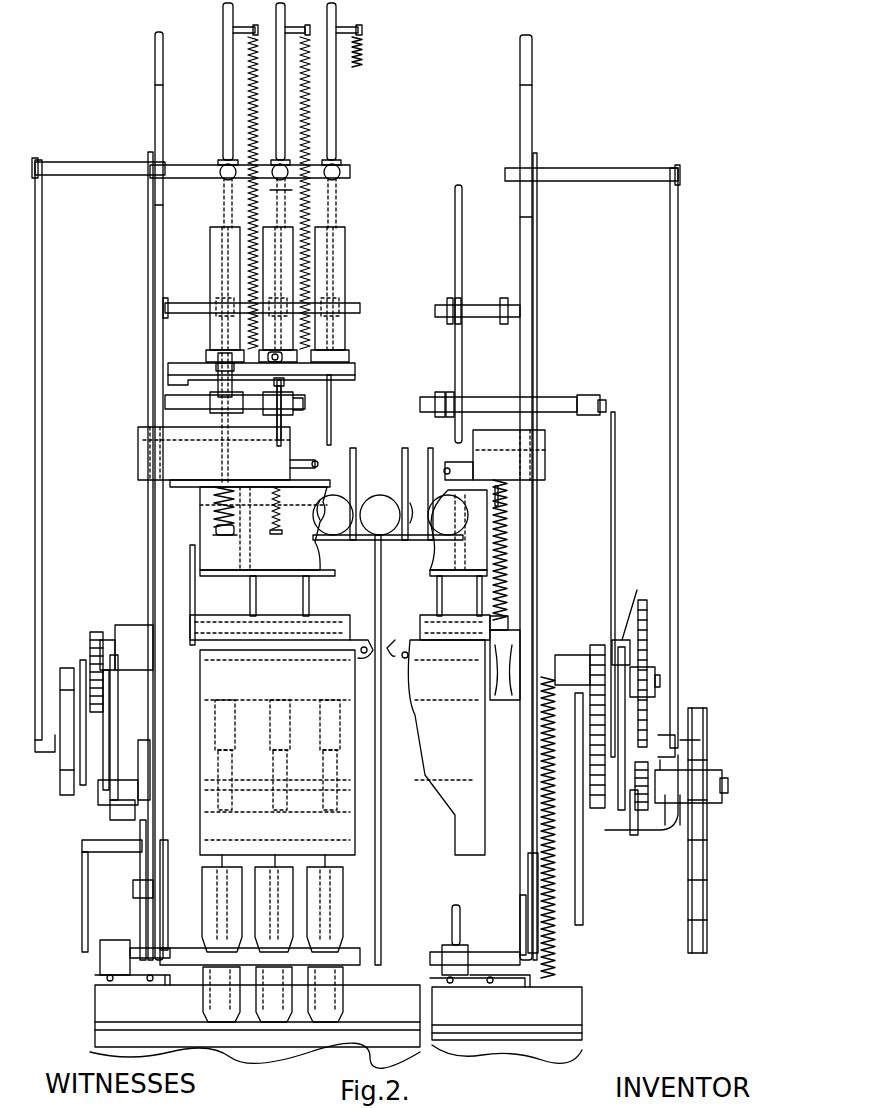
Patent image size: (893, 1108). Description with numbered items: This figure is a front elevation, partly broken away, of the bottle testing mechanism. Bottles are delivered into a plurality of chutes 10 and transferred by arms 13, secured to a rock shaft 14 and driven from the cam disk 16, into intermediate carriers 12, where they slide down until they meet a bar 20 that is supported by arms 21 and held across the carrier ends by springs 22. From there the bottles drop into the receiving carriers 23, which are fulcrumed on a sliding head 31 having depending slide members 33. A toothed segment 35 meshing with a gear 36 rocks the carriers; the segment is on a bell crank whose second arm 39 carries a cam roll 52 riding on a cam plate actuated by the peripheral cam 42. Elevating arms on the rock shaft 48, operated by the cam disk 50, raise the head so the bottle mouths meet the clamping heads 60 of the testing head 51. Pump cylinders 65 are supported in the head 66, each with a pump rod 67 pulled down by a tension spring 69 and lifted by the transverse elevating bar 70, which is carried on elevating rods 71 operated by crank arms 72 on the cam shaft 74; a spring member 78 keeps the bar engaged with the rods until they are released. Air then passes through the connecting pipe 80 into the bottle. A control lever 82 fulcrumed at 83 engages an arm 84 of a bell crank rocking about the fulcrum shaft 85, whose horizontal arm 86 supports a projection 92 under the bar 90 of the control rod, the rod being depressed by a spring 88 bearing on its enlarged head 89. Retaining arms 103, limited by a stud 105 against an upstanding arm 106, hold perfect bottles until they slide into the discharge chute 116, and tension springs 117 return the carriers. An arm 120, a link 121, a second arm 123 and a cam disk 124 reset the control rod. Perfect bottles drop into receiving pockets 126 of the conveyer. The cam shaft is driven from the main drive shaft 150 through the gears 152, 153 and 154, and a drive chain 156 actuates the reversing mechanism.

The chutes 10 is at (386, 460).
The intermediate carriers 12 is at (324, 556).
The arms 13 is at (381, 605).
The rock shaft 14 is at (430, 946).
The cam disk 16 is at (67, 667).
The bar 20 is at (340, 623).
The arms 21 is at (188, 568).
The springs 22 is at (507, 556).
The receiving carriers 23 is at (317, 605).
The sliding head 31 is at (130, 624).
The slide members 33 is at (140, 855).
The toothed segment 35 is at (80, 688).
The gear 36 is at (97, 630).
The second arm 39 is at (85, 850).
The peripheral cam 42 is at (82, 803).
The rock shaft 48 is at (380, 653).
The cam disk 50 is at (120, 820).
The testing head 51 is at (138, 441).
The cam roll 52 is at (170, 850).
The clamping heads 60 is at (226, 536).
The pump cylinders 65 is at (270, 270).
The head 66 is at (158, 338).
The pump rod 67 is at (276, 118).
The tension spring 69 is at (310, 83).
The elevating bar 70 is at (118, 166).
The elevating rods 71 is at (42, 360).
The crank arms 72 is at (40, 752).
The cam shaft 74 is at (97, 818).
The spring member 78 is at (148, 253).
The connecting pipe 80 is at (216, 380).
The control lever 82 is at (332, 385).
The fulcrum 83 is at (358, 308).
The arm 84 is at (284, 418).
The fulcrum shaft 85 is at (207, 405).
The horizontal arm 86 is at (270, 408).
The spring 88 is at (215, 502).
The enlarged head 89 is at (275, 536).
The bar 90 is at (285, 385).
The projection 92 is at (270, 394).
The retaining arms 103 is at (222, 742).
The stud 105 is at (222, 767).
The upstanding arm 106 is at (266, 777).
The discharge chute 116 is at (460, 836).
The tension springs 117 is at (520, 911).
The arm 120 is at (603, 404).
The link 121 is at (615, 500).
The second arm 123 is at (625, 640).
The cam disk 124 is at (658, 686).
The receiving pockets 126 is at (203, 998).
The main drive shaft 150 is at (724, 785).
The gear 152 is at (640, 815).
The gear 153 is at (646, 618).
The gear 154 is at (597, 642).
The drive chain 156 is at (585, 908).